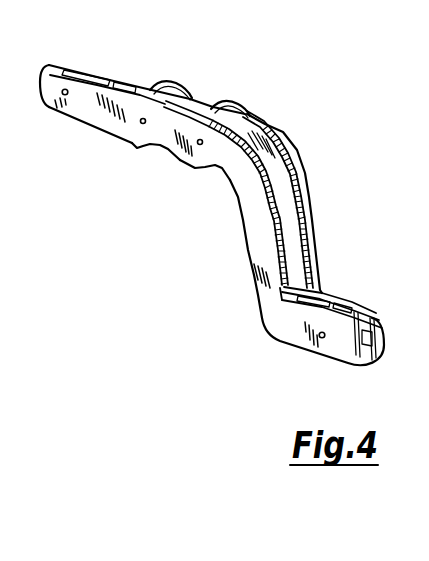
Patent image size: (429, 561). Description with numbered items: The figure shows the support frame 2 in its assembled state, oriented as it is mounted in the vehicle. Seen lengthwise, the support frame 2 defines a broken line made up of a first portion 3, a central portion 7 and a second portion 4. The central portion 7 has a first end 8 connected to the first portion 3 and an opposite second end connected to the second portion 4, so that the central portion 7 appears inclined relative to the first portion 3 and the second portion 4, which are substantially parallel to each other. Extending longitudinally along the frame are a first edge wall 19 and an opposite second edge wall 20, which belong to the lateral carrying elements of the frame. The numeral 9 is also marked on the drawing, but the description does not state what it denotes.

The support frame 2 is at (217, 214).
The first portion 3 is at (120, 72).
The second portion 4 is at (290, 339).
The central portion 7 is at (314, 245).
The first end 8 is at (213, 167).
The inner side wall 9 is at (256, 292).
The first edge wall 19 is at (272, 218).
The second edge wall 20 is at (150, 147).